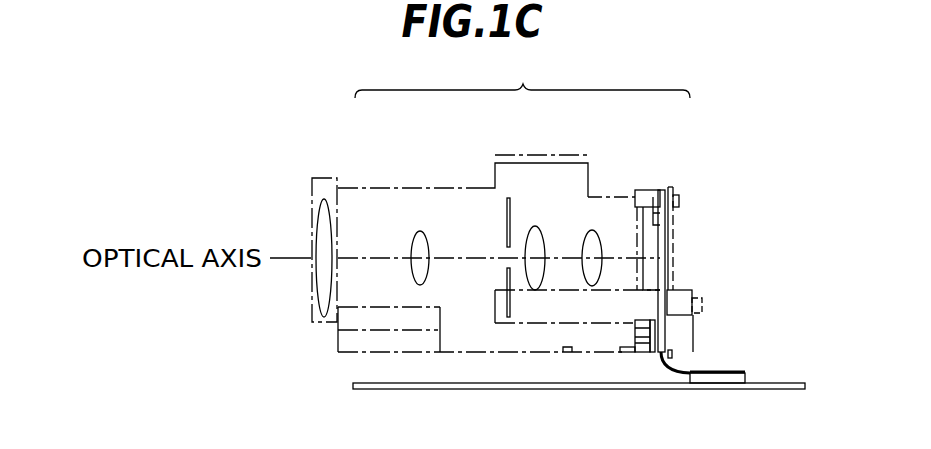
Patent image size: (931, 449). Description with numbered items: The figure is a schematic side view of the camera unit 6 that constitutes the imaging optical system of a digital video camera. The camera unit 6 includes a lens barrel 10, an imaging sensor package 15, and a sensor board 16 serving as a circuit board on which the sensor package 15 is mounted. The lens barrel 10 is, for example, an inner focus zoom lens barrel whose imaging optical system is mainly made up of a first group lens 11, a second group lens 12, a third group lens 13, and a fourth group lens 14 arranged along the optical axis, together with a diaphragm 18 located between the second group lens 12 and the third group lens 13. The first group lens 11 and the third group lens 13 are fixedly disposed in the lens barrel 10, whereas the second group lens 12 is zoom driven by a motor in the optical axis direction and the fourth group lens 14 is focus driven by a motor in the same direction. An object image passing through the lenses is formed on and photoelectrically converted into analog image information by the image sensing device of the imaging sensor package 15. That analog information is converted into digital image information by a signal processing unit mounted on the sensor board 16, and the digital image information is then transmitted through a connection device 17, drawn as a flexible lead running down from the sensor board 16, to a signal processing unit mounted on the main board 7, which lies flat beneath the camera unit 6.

The camera unit 6 is at (522, 77).
The main board 7 is at (353, 386).
The lens barrel 10 is at (367, 174).
The first group lens 11 is at (323, 296).
The second group lens 12 is at (421, 233).
The third group lens 13 is at (537, 226).
The fourth group lens 14 is at (595, 231).
The imaging sensor package 15 is at (646, 227).
The sensor board 16 is at (662, 192).
The connection device 17 is at (731, 373).
The diaphragm 18 is at (507, 218).